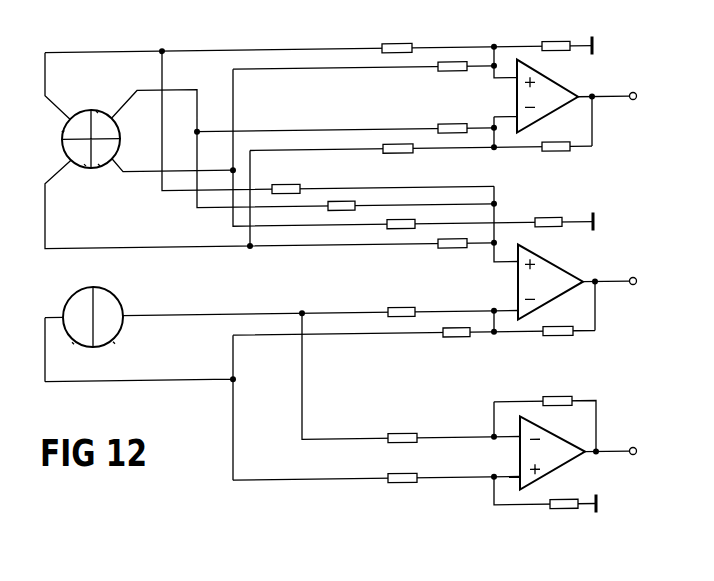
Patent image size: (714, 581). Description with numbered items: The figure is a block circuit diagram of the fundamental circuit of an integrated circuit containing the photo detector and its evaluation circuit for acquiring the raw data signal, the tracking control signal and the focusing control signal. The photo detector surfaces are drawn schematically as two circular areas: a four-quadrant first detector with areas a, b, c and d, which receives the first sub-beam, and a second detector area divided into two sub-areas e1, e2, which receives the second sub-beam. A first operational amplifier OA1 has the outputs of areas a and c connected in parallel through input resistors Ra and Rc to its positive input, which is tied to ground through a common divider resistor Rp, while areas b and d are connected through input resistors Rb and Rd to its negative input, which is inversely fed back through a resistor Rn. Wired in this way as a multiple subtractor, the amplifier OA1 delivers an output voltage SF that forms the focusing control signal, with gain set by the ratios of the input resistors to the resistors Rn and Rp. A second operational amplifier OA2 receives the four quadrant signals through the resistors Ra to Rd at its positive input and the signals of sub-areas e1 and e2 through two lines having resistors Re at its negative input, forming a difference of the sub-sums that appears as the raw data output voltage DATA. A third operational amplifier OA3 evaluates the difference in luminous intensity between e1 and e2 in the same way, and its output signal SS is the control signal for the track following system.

The photo detector area a is at (63, 128).
The photo detector area b is at (104, 92).
The photo detector area c is at (99, 165).
The photo detector area d is at (84, 163).
The sub-area e1 is at (72, 341).
The sub-area e2 is at (114, 342).
The input resistor Ra is at (403, 44).
The input resistor Rb is at (443, 125).
The input resistor Rc is at (452, 63).
The input resistor Rd is at (393, 145).
The resistor Re is at (448, 340).
The divider resistor Rp is at (555, 44).
The feedback resistor Rn is at (557, 156).
The first operational amplifier OA1 is at (517, 100).
The second operational amplifier OA2 is at (518, 286).
The third operational amplifier OA3 is at (520, 458).
The output voltage SF is at (620, 96).
The output voltage DATA is at (610, 267).
The output signal SS is at (605, 438).